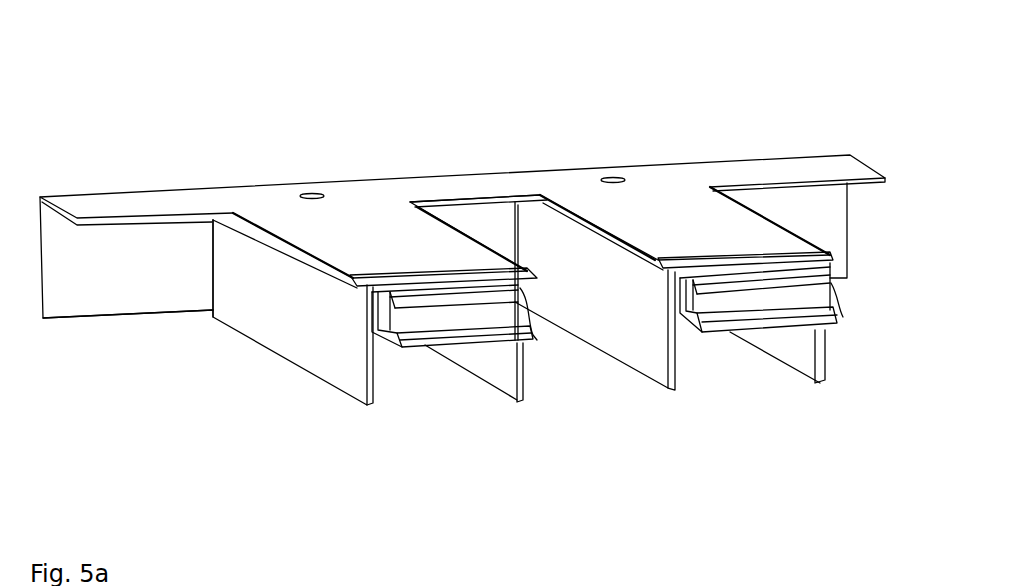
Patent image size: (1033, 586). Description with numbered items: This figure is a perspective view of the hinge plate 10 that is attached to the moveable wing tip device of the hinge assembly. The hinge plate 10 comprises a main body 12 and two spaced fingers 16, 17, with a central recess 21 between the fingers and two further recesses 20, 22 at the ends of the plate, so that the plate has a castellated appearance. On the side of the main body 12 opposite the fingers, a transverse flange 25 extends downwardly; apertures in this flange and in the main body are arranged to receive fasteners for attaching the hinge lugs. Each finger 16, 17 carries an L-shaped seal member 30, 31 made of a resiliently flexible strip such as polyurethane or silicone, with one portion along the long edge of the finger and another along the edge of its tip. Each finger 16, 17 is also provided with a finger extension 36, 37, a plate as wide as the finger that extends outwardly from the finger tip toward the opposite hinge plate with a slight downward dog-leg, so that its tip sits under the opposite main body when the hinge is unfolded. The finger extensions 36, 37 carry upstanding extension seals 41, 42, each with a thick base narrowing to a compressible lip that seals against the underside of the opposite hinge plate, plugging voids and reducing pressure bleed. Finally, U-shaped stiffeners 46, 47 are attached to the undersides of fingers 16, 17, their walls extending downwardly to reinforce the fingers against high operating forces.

The hinge plate 10 is at (330, 150).
The main body 12 is at (451, 183).
The finger 16 is at (712, 207).
The finger 17 is at (307, 225).
The recess 20 is at (807, 183).
The central recess 21 is at (500, 197).
The recess 22 is at (143, 210).
The transverse flange 25 is at (102, 290).
The seal member 30 is at (843, 317).
The seal member 31 is at (530, 330).
The finger extension 36 is at (783, 330).
The finger extension 37 is at (468, 340).
The extension seal 41 is at (730, 310).
The extension seal 42 is at (428, 320).
The stiffener 46 is at (657, 377).
The stiffener 47 is at (325, 372).